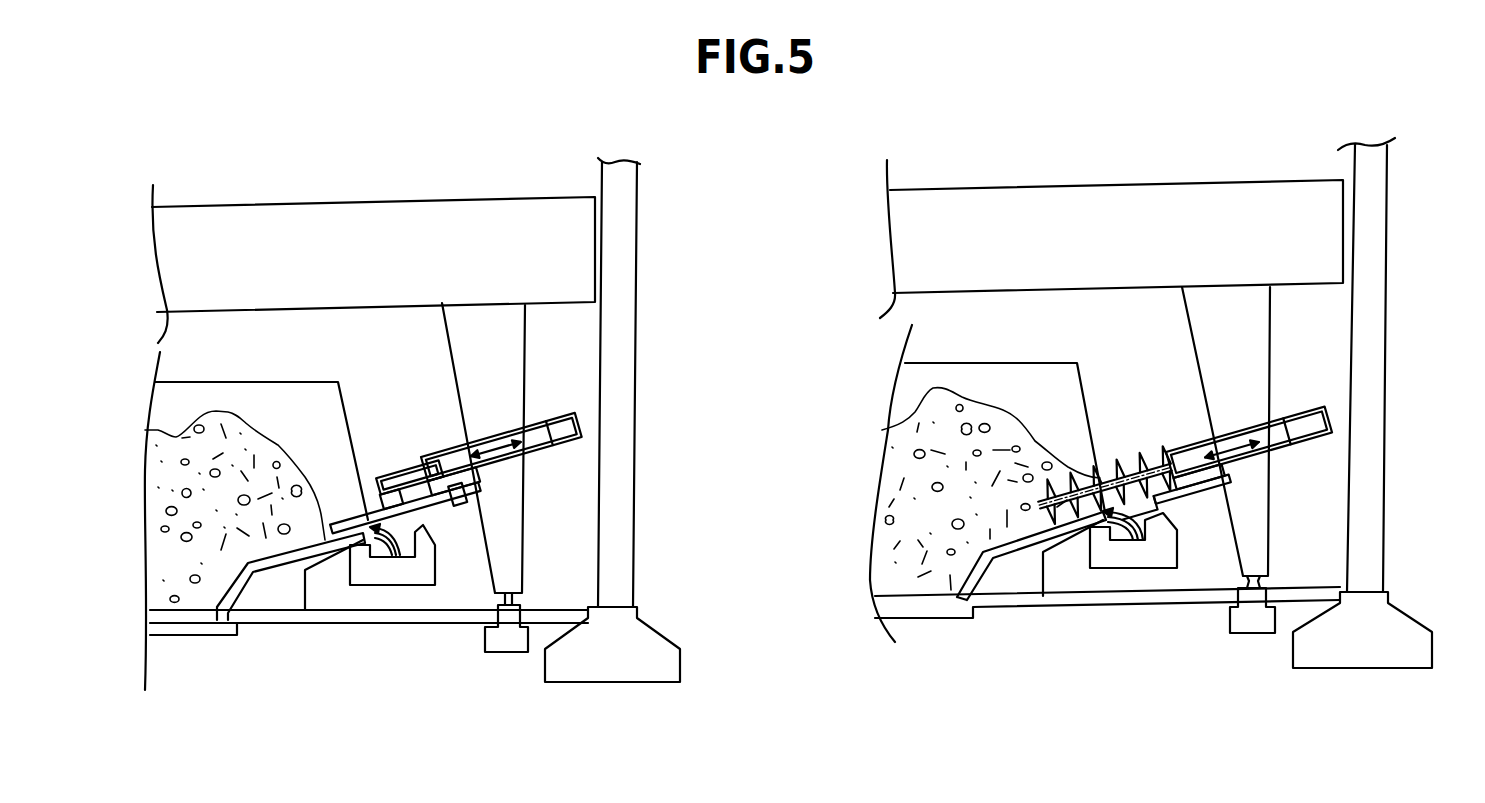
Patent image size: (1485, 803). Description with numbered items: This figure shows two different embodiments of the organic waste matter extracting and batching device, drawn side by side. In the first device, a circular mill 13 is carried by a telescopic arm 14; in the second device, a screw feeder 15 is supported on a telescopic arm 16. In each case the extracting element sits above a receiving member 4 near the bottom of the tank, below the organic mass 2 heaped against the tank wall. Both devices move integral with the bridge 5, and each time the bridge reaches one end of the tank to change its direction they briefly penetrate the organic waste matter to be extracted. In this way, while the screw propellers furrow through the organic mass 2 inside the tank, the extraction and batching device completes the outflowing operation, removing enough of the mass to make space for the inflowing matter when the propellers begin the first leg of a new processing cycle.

The organic mass 2 is at (188, 523).
The receiving block 4 is at (378, 573).
The bridge 5 is at (504, 262).
The circular mill 13 is at (407, 522).
The telescopic arm 14 is at (421, 475).
The screw feeder 15 is at (1136, 482).
The telescopic arm 16 is at (1325, 412).